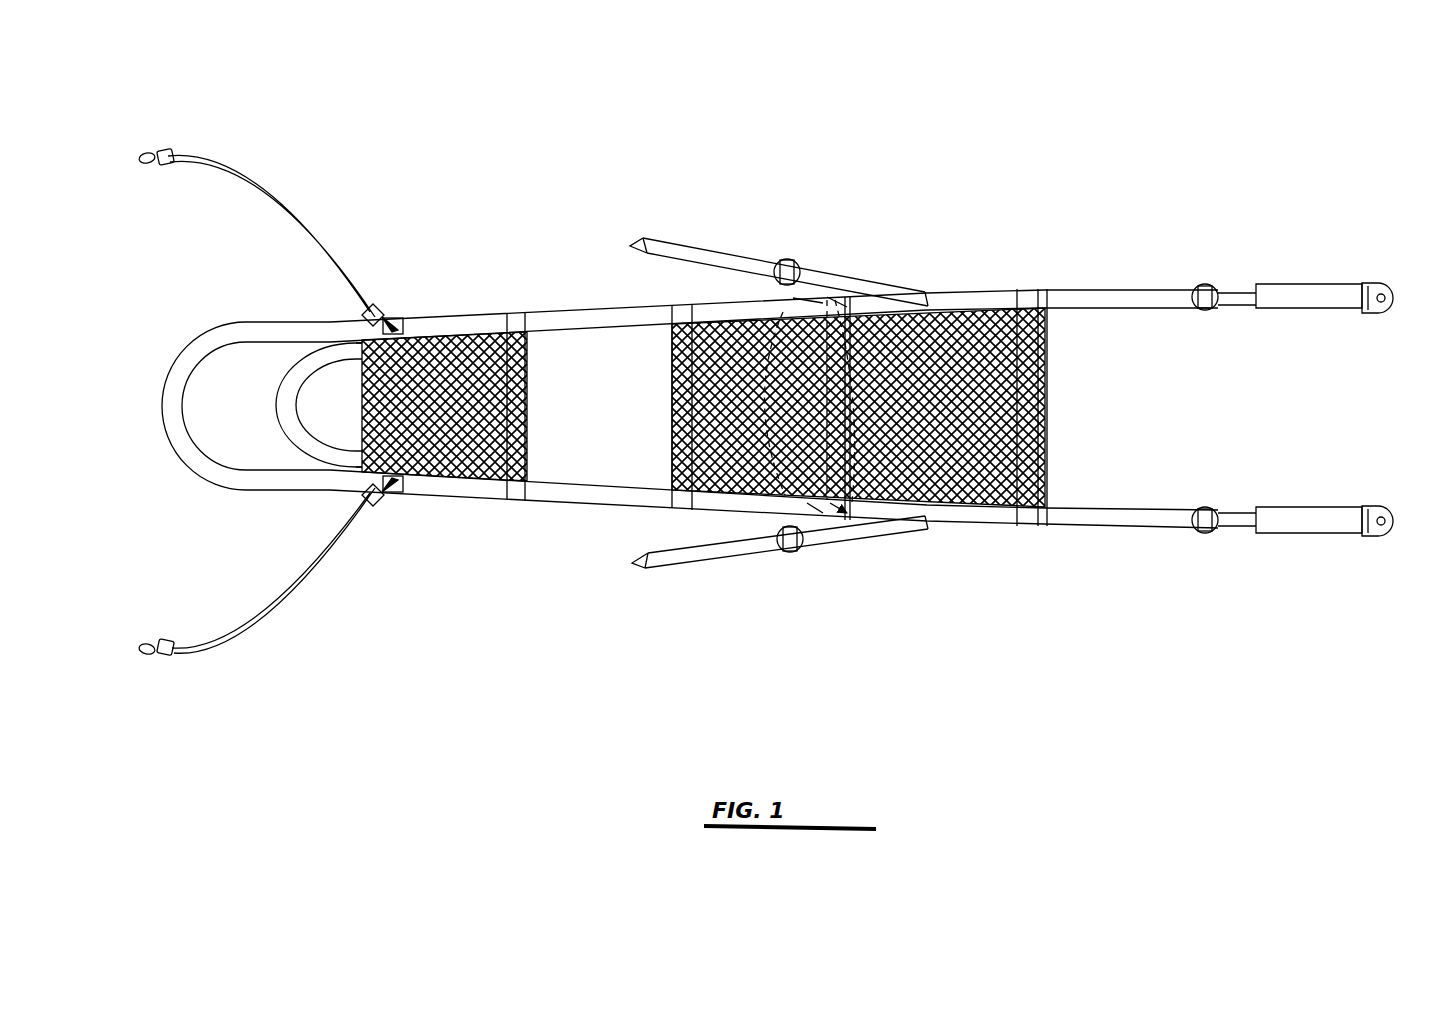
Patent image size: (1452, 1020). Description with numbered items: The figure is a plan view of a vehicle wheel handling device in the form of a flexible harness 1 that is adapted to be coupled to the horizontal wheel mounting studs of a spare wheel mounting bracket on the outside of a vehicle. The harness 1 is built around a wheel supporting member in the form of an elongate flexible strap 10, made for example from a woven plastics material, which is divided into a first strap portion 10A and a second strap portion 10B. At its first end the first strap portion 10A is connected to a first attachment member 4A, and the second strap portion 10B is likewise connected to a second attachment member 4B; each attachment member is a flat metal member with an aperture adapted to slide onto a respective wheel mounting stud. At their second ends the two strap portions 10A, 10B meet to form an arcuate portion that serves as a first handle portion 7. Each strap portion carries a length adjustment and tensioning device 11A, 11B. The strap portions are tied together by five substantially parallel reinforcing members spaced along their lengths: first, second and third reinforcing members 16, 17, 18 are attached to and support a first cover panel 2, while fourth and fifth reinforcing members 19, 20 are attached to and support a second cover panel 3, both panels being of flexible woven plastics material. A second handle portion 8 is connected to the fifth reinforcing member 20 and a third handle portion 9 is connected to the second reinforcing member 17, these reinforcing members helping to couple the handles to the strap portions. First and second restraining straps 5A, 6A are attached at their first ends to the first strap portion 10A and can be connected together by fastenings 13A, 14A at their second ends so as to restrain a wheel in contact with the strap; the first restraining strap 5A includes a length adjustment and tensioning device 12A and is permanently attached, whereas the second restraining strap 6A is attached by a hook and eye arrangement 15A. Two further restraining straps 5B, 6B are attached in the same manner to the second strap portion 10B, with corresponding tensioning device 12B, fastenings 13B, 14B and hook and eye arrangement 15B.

The flexible harness 1 is at (906, 211).
The first cover panel 2 is at (713, 428).
The second cover panel 3 is at (466, 336).
The first attachment member 4A is at (1381, 281).
The second attachment member 4B is at (1385, 540).
The first restraining strap 5A is at (708, 236).
The further restraining strap 5B is at (720, 566).
The second restraining strap 6A is at (275, 186).
The further restraining strap 6B is at (262, 612).
The first handle portion 7 is at (176, 433).
The second handle portion 8 is at (279, 431).
The third handle portion 9 is at (722, 300).
The elongate flexible strap 10 is at (1067, 277).
The first strap portion 10A is at (1132, 287).
The second strap portion 10B is at (1127, 532).
The length adjustment and tensioning device 11A is at (1208, 284).
The length adjustment and tensioning device 11B is at (1212, 534).
The length adjustment and tensioning device 12A is at (788, 259).
The length adjustment and tensioning device 12B is at (797, 551).
The fastening 13A is at (633, 242).
The fastening 13B is at (645, 566).
The fastening 14A is at (148, 151).
The fastening 14B is at (155, 652).
The hook and eye arrangement 15A is at (390, 323).
The hook and eye arrangement 15B is at (384, 496).
The first reinforcing member 16 is at (1030, 525).
The second reinforcing member 17 is at (852, 502).
The third reinforcing member 18 is at (690, 514).
The fourth reinforcing member 19 is at (520, 503).
The fifth reinforcing member 20 is at (358, 352).